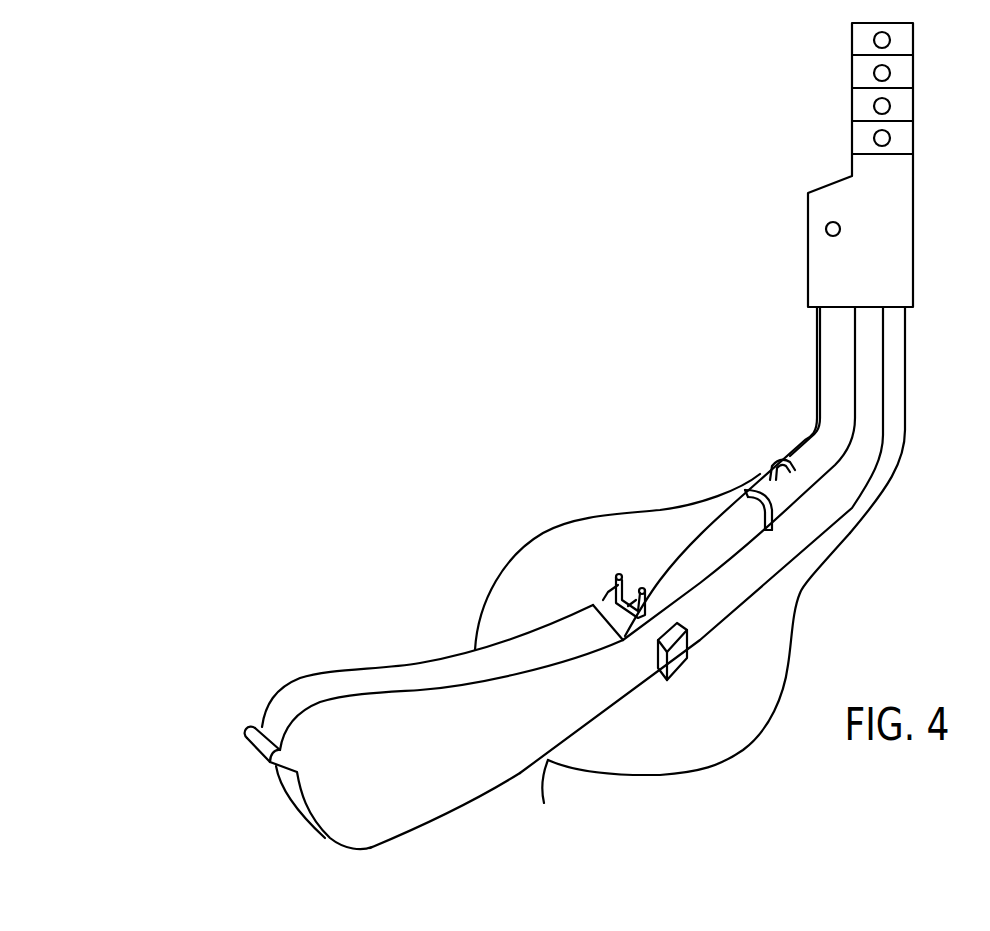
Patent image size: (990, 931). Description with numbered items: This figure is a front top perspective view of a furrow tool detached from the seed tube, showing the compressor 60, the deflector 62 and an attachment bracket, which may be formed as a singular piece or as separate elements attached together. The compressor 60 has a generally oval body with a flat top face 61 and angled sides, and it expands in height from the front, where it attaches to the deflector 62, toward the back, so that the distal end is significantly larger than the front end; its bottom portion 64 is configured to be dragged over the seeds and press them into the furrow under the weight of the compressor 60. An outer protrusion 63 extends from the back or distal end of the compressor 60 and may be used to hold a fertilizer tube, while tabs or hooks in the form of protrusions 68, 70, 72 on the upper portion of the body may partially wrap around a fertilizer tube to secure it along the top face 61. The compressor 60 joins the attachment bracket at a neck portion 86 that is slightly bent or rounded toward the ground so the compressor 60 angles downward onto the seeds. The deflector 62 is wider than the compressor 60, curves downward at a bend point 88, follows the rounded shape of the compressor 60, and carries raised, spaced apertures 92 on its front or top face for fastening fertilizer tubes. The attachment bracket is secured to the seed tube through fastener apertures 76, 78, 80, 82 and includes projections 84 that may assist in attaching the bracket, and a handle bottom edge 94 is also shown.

The compressor 60 is at (300, 645).
The top face 61 is at (375, 675).
The deflector 62 is at (907, 386).
The outer protrusion 63 is at (252, 733).
The bottom portion 64 is at (430, 820).
The protrusion 68 is at (632, 590).
The protrusion 70 is at (762, 480).
The protrusion 72 is at (776, 462).
The fastener aperture 76 is at (890, 40).
The fastener aperture 78 is at (890, 73).
The fastener aperture 80 is at (890, 106).
The fastener aperture 82 is at (890, 138).
The projection 84 is at (903, 265).
The neck portion 86 is at (873, 345).
The bend point 88 is at (800, 600).
The aperture 92 is at (610, 597).
The handle bottom edge 94 is at (547, 795).